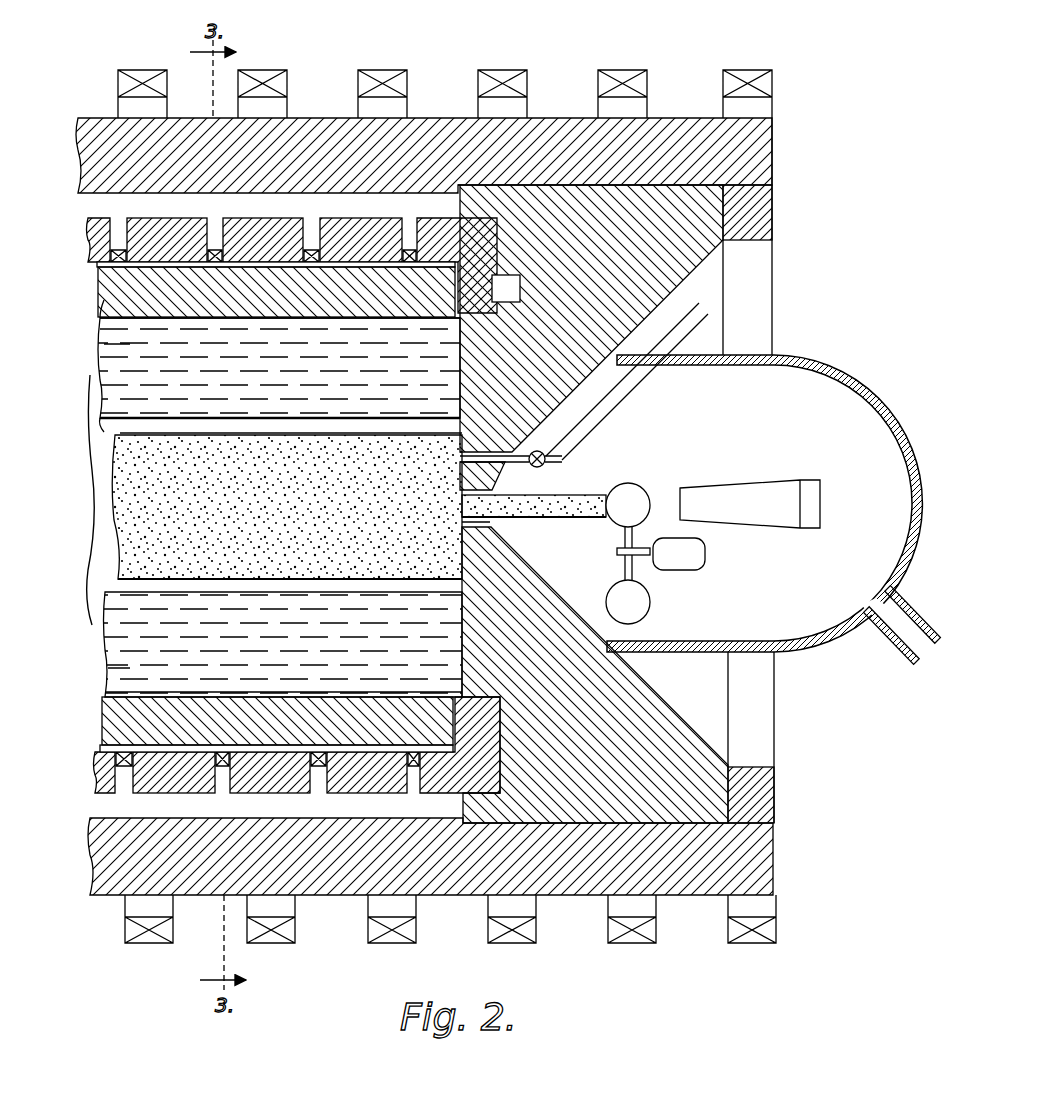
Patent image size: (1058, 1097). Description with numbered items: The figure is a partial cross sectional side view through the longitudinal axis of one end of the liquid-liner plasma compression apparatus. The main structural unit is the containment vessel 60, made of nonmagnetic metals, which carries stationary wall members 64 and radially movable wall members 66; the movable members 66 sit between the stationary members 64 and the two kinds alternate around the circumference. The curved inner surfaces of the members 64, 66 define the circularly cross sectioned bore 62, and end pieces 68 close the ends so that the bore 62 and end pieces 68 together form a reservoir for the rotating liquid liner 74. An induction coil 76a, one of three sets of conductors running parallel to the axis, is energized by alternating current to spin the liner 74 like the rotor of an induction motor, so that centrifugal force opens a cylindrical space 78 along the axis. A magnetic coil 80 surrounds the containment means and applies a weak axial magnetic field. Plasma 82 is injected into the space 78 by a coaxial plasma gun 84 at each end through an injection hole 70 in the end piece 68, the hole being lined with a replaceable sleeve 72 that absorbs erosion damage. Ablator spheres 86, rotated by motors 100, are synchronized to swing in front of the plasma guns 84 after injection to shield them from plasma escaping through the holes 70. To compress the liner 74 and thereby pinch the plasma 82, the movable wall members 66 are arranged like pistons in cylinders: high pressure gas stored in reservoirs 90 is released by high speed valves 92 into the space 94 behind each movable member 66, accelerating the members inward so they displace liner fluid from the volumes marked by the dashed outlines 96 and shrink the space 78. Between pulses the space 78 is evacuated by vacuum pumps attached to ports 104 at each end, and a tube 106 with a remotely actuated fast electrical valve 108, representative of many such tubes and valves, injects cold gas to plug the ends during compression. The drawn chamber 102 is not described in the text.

The containment vessel 60 is at (358, 168).
The bore 62 is at (113, 400).
The stationary wall members 64 is at (88, 235).
The radially movable wall members 66 is at (276, 506).
The end pieces 68 is at (630, 273).
The injection holes 70 is at (490, 506).
The replaceable sleeve 72 is at (110, 321).
The liquid liner 74 is at (338, 393).
The induction coil 76a is at (510, 275).
The cylindrical space 78 is at (128, 431).
The magnetic coil 80 is at (368, 70).
The plasma 82 is at (272, 513).
The coaxial plasma guns 84 is at (750, 504).
The ablator spheres 86 is at (628, 553).
The reservoirs 90 is at (312, 506).
The high speed valves 92 is at (214, 250).
The space behind the movable wall member 94 is at (97, 265).
The dashed outlines 96 is at (112, 344).
The motors 100 is at (692, 564).
The vessel 102 is at (803, 428).
The ports 104 is at (928, 650).
The tube 106 is at (490, 455).
The remotely actuated fast electrical valve 108 is at (548, 463).